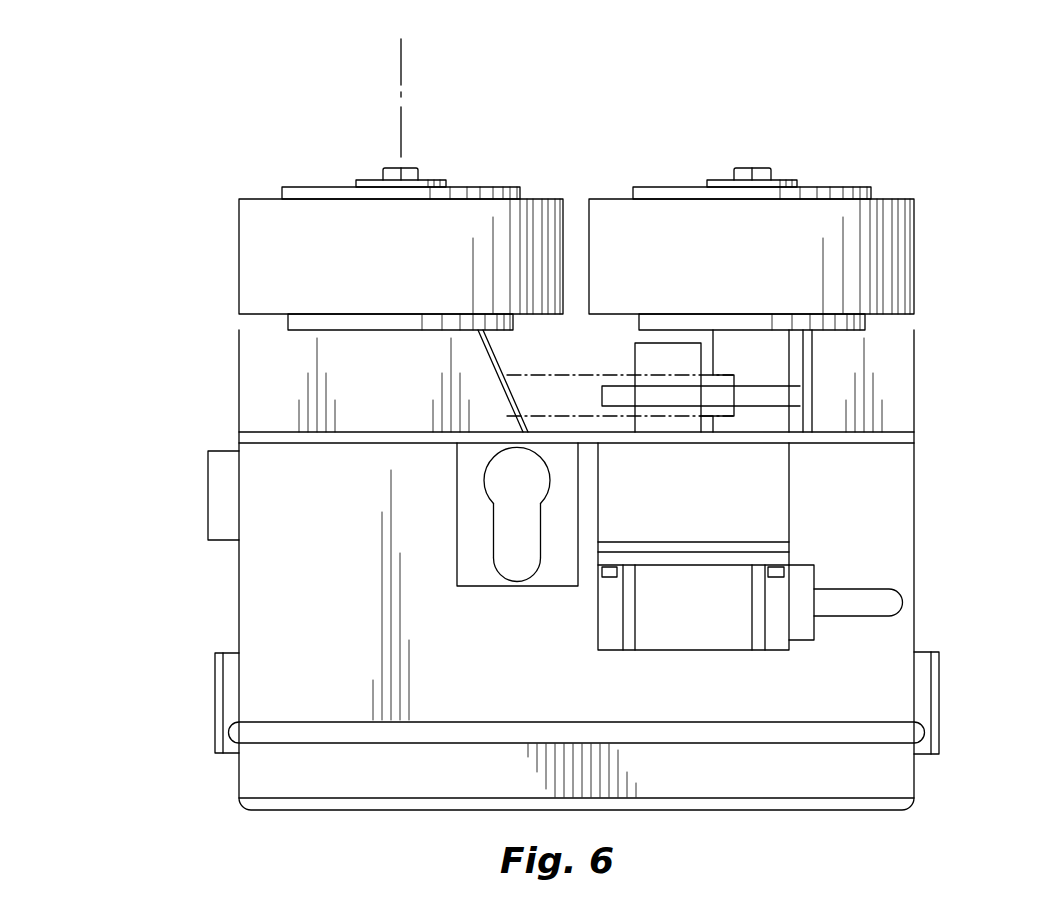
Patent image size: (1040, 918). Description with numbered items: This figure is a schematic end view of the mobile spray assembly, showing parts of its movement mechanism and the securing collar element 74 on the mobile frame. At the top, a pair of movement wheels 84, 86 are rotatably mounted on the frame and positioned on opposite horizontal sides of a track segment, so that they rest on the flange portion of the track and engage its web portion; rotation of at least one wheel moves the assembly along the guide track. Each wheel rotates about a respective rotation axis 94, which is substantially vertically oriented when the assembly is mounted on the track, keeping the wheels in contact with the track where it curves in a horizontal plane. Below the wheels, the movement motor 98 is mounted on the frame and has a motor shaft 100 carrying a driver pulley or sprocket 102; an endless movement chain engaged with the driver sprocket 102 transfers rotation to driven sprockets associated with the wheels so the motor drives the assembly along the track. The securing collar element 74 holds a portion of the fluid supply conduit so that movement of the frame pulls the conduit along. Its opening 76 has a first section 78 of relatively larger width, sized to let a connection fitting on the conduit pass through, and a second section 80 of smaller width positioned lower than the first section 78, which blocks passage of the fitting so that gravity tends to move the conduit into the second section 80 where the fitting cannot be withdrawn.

The securing collar element 74 is at (462, 490).
The opening 76 is at (493, 503).
The first section 78 is at (487, 466).
The second section 80 is at (495, 565).
The movement wheel 84 is at (896, 249).
The movement wheel 86 is at (260, 242).
The rotation axis 94 is at (400, 83).
The movement motor 98 is at (777, 509).
The motor shaft 100 is at (668, 424).
The driver pulley or sprocket 102 is at (643, 393).